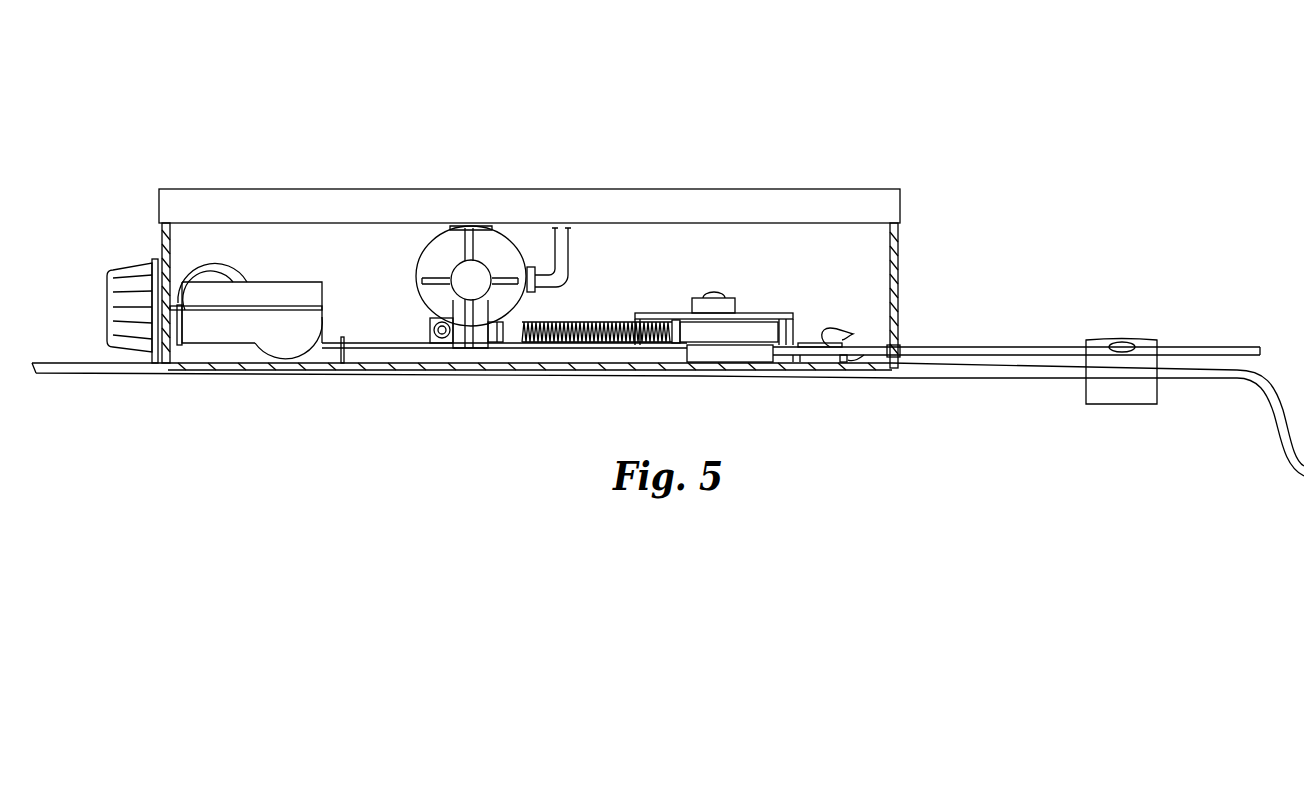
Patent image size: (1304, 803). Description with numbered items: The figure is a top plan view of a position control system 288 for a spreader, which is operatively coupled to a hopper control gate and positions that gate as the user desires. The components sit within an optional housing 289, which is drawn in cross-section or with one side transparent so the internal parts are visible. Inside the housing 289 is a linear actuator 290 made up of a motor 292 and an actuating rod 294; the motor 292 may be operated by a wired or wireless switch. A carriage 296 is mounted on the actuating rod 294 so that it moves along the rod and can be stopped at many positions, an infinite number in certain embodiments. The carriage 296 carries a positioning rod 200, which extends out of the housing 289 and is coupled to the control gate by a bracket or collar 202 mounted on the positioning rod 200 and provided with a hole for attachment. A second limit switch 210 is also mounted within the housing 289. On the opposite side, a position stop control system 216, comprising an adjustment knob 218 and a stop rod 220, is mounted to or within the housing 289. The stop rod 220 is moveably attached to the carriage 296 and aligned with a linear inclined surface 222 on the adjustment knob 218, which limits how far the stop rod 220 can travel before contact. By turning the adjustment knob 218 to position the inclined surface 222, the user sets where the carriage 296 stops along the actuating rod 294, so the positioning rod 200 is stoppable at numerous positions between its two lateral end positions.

The position control system 288 is at (868, 134).
The housing 289 is at (162, 240).
The linear actuator 290 is at (637, 241).
The position stop control system 216 is at (314, 262).
The adjustment knob 218 is at (108, 302).
The stop rod 220 is at (380, 350).
The inclined surface 222 is at (262, 348).
The motor 292 is at (443, 250).
The actuating rod 294 is at (575, 342).
The carriage 296 is at (672, 358).
The second limit switch 210 is at (820, 360).
The bracket or collar 202 is at (1098, 343).
The positioning rod 200 is at (1213, 347).